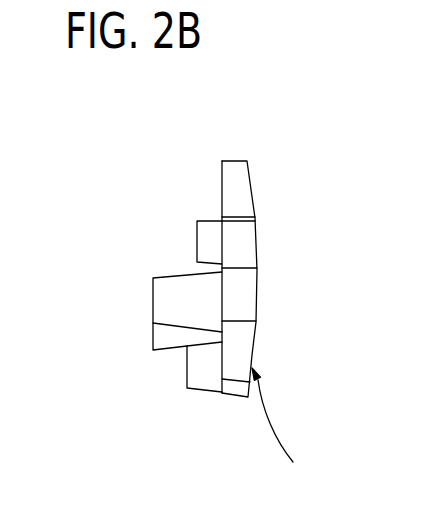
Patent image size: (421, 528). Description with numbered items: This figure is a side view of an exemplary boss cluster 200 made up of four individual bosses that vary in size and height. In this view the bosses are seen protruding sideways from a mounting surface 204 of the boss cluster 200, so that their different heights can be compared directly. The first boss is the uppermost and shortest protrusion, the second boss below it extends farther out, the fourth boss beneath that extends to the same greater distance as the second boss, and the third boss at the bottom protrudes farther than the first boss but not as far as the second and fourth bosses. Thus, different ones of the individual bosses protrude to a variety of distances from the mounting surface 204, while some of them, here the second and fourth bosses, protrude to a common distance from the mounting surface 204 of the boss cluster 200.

The boss cluster 200 is at (222, 161).
The mounting surface 204 is at (286, 429).